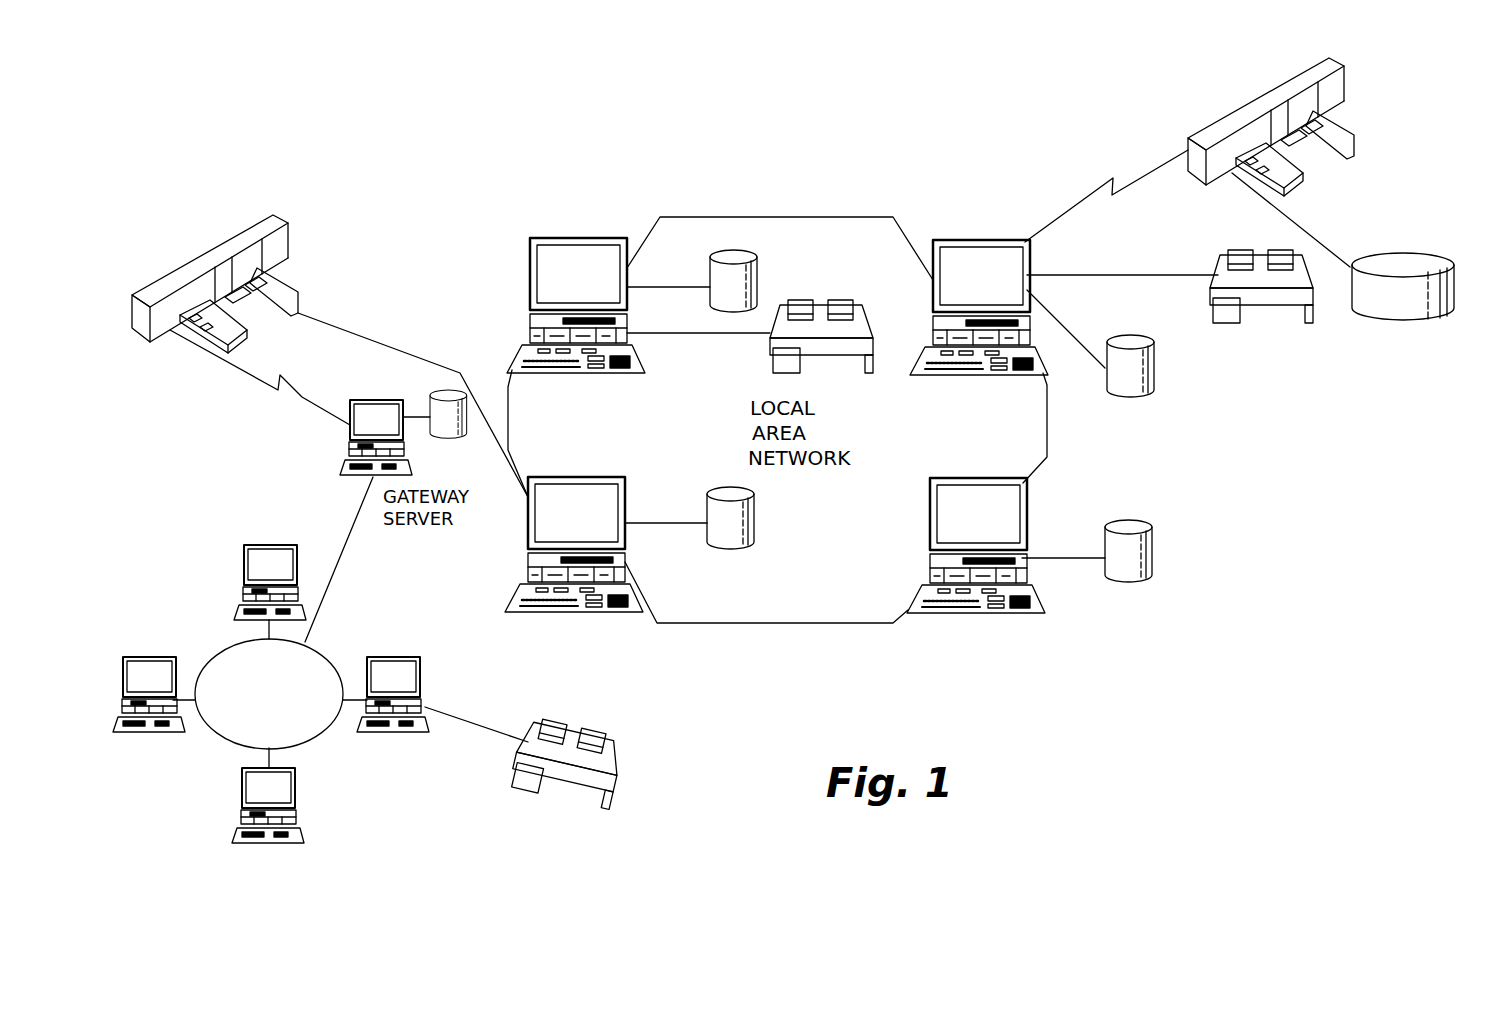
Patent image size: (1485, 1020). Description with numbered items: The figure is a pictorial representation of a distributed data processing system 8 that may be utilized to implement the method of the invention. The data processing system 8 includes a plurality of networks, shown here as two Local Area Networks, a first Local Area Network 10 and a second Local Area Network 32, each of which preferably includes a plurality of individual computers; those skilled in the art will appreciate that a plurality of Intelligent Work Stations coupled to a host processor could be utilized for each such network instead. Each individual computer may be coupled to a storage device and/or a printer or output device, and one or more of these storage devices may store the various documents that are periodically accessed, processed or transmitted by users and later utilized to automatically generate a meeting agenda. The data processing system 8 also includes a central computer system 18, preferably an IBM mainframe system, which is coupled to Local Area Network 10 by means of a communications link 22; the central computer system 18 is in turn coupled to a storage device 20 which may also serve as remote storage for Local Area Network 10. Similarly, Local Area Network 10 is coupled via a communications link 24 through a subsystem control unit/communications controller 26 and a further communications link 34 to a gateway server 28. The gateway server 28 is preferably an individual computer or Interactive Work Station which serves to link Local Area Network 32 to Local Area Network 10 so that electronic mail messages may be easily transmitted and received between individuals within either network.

The data processing system 8 is at (811, 178).
The local area network 10 is at (800, 623).
The central computer system 18 is at (1265, 100).
The storage device 20 is at (1422, 258).
The communications link 22 is at (1150, 168).
The communications link 24 is at (386, 351).
The subsystem control unit/communications controller 26 is at (282, 223).
The gateway server 28 is at (378, 400).
The local area network 32 is at (222, 735).
The communications link 34 is at (301, 398).